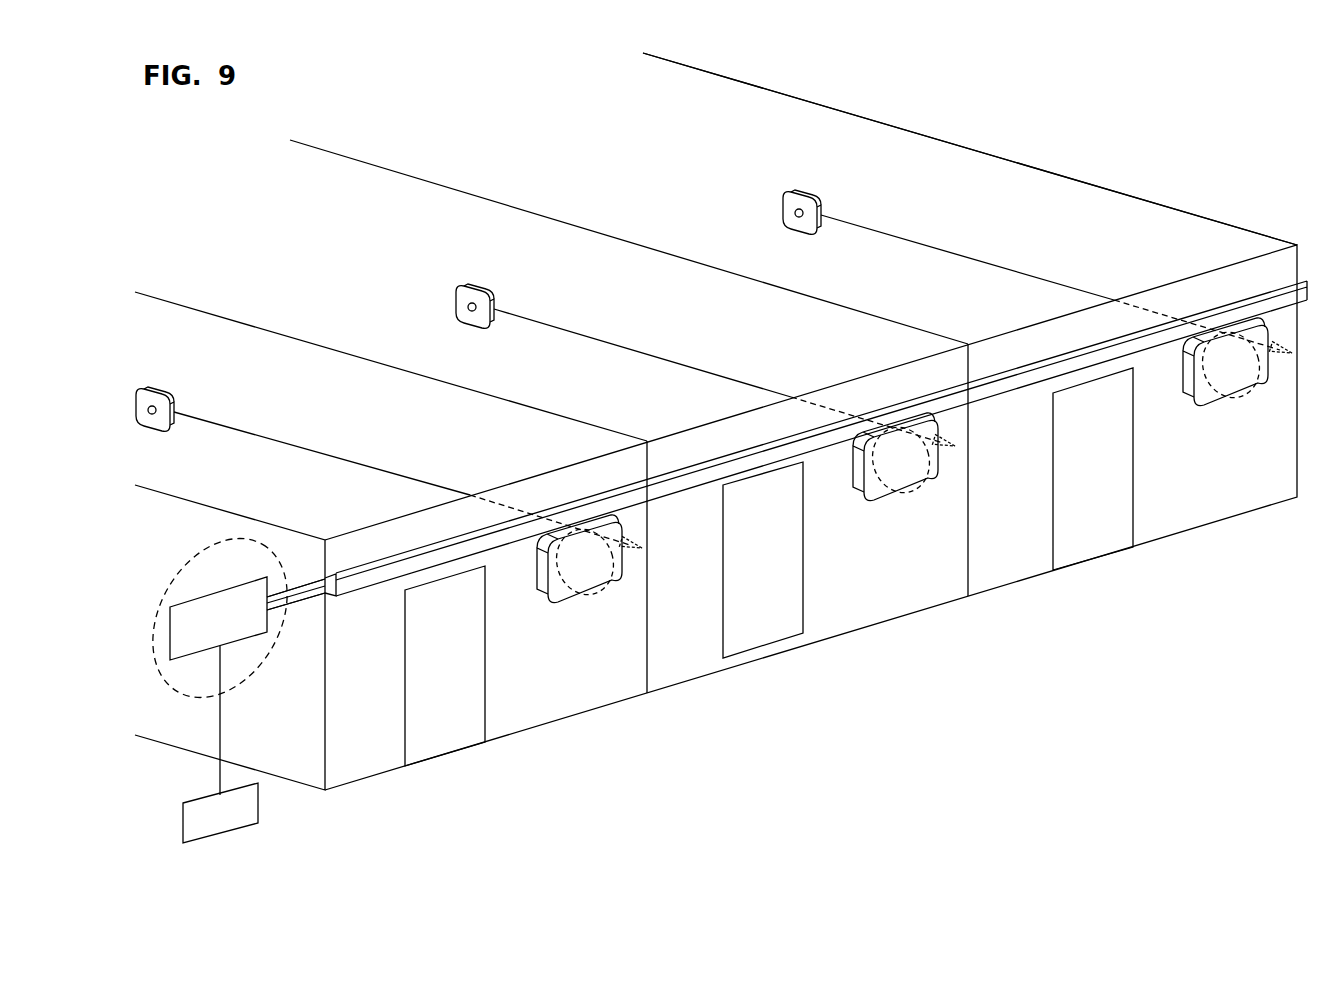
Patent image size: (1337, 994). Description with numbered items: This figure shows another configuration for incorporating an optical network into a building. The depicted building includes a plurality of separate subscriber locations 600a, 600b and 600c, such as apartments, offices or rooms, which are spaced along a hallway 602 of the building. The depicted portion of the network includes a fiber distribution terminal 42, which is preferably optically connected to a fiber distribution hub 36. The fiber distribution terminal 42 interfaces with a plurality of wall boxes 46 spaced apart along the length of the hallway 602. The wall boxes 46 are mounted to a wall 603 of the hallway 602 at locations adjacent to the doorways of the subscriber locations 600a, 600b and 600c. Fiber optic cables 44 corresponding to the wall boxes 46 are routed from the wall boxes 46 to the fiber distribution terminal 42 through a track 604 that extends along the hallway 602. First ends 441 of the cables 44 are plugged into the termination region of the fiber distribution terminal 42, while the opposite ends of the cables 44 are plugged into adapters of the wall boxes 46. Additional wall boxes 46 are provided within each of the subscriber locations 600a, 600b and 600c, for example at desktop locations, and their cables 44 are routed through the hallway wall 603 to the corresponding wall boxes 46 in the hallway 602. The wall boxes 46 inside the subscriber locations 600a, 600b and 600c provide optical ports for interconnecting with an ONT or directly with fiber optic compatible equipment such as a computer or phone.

The fiber distribution hub 36 is at (245, 823).
The fiber distribution terminal 42 is at (179, 566).
The fiber optic cables 44 is at (308, 448).
The first ends of the cables 441 is at (268, 613).
The wall boxes 46 is at (175, 402).
The subscriber location 600a is at (198, 333).
The subscriber location 600b is at (405, 200).
The subscriber location 600c is at (758, 112).
The hallway 602 is at (846, 681).
The wall 603 is at (572, 672).
The track 604 is at (403, 563).